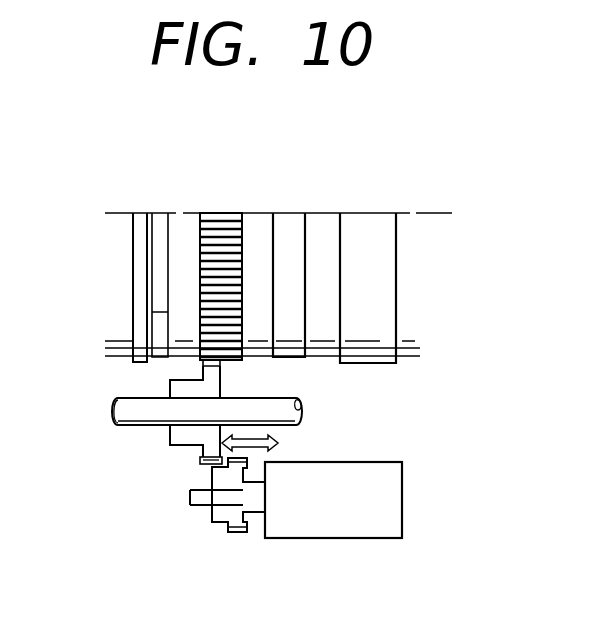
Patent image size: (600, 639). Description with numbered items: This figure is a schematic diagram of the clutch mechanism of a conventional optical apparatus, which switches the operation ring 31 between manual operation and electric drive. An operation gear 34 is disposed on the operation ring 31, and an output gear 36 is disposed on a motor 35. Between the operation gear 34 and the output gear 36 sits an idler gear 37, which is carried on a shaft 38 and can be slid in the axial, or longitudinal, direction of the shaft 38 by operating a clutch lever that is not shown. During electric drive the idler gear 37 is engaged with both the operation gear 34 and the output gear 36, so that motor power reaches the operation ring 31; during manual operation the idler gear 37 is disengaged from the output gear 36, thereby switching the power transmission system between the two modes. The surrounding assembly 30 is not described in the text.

The drum stack 30 is at (372, 373).
The operation ring 31 is at (218, 213).
The operation gear 34 is at (222, 248).
The motor 35 is at (340, 538).
The output gear 36 is at (210, 518).
The idler gear 37 is at (170, 445).
The shaft 38 is at (118, 427).